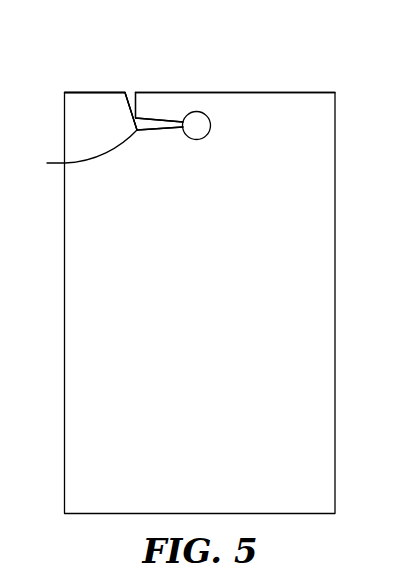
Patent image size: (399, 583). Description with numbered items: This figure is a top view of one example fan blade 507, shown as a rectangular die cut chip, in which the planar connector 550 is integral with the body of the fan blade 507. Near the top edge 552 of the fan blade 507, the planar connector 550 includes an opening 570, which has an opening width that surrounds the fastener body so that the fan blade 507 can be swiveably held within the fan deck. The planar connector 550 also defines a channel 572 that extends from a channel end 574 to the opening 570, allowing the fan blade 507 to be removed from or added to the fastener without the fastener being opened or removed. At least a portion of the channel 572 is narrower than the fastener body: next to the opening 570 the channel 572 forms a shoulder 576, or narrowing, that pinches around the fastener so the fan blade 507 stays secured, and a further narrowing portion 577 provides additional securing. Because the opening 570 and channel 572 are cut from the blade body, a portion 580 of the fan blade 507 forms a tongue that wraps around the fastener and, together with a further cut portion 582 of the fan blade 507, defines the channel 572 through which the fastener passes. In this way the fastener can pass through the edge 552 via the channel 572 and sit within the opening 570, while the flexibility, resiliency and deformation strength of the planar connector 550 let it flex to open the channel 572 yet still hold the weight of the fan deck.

The fan blade 507 is at (335, 238).
The planar connector 550 is at (243, 88).
The edge 552 is at (83, 92).
The opening 570 is at (210, 122).
The channel 572 is at (148, 141).
The channel end 574 is at (134, 91).
The shoulder 576 is at (174, 118).
The narrowing portion 577 is at (76, 152).
The portion 580 is at (160, 92).
The further cut portion 582 is at (98, 118).